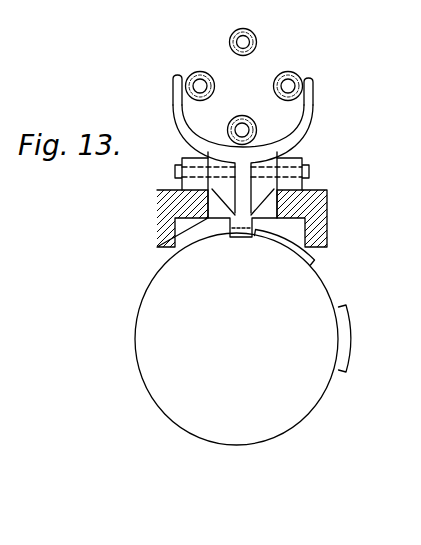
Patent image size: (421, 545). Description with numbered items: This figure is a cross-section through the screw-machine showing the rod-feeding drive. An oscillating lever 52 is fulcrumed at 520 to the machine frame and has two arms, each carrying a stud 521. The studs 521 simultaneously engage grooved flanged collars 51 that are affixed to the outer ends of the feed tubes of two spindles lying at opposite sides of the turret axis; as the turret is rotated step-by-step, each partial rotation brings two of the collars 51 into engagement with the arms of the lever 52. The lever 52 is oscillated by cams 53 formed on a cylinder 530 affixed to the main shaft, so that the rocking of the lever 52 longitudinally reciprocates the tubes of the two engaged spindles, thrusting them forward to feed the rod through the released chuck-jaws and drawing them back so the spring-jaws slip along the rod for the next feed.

The flanged collar 51 is at (199, 71).
The oscillating lever 52 is at (248, 127).
The studs 521 is at (184, 73).
The fulcrum 520 is at (307, 172).
The cams 53 is at (313, 316).
The ball 530 is at (204, 339).